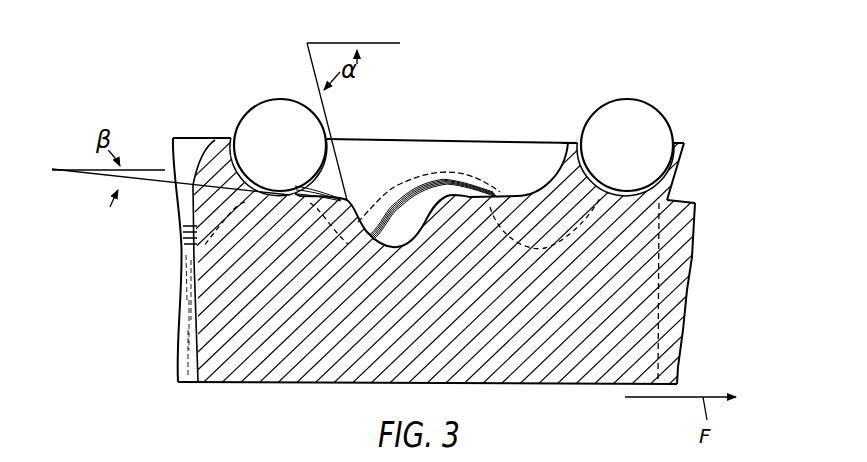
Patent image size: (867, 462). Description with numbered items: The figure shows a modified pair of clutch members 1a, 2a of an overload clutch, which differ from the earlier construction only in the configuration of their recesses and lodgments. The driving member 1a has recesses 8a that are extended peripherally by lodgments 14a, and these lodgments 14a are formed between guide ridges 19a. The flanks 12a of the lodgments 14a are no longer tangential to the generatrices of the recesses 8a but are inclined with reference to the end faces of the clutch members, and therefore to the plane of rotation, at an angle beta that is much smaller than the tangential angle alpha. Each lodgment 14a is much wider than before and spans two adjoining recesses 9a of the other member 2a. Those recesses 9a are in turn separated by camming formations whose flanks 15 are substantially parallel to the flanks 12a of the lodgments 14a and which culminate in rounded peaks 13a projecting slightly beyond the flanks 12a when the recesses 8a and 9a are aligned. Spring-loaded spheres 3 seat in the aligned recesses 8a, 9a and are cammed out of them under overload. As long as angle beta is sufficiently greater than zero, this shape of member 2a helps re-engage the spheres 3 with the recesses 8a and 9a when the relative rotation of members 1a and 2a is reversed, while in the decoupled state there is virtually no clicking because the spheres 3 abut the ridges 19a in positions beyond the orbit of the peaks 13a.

The clutch member 1a is at (674, 280).
The clutch member 2a is at (186, 301).
The sphere 3 is at (268, 109).
The recess 8a is at (412, 242).
The recess 9a is at (343, 243).
The flank 12a is at (356, 212).
The rounded peak 13a is at (450, 196).
The lodgment 14a is at (521, 191).
The flank 15 is at (426, 195).
The guide ridge 19a is at (568, 142).